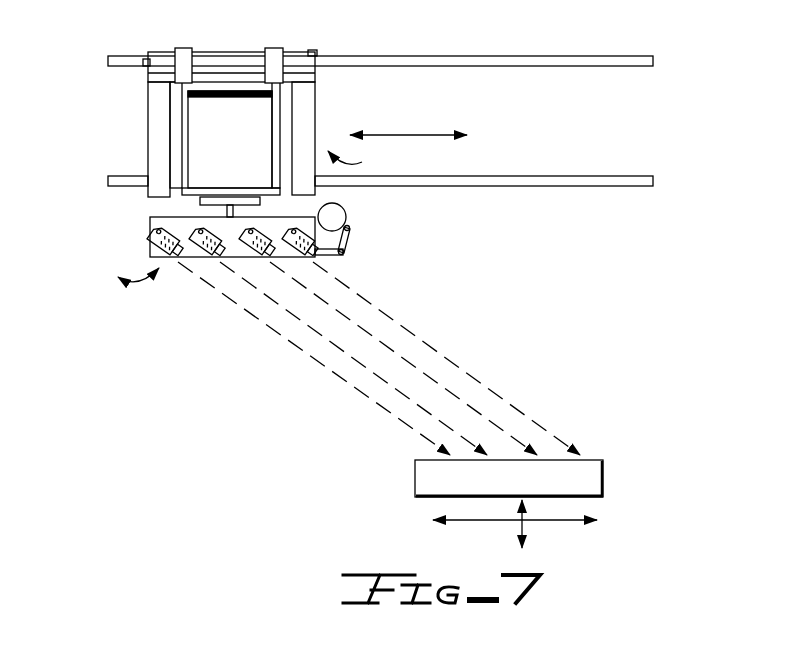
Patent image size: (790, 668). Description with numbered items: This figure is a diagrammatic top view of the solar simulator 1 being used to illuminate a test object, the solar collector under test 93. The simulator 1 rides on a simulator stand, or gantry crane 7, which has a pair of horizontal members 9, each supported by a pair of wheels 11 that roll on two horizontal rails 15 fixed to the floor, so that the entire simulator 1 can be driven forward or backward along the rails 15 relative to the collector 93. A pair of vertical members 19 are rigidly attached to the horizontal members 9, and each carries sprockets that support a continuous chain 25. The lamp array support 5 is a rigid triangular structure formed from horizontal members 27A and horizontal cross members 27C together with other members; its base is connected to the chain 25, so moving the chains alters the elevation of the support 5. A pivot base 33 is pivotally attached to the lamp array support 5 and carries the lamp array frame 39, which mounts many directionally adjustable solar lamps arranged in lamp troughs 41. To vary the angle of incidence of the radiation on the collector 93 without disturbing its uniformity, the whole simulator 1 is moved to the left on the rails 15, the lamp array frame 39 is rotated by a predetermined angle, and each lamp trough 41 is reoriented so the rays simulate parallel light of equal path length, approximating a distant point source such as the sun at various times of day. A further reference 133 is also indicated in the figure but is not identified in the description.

The solar simulator 1 is at (63, 141).
The lamp array support 5 is at (232, 108).
The gantry crane 7 is at (351, 160).
The horizontal members 9 is at (148, 124).
The wheels 11 is at (388, 310).
The horizontal rails 15 is at (519, 66).
The vertical members 19 is at (150, 53).
The continuous chain 25 is at (183, 52).
The horizontal members 27A is at (268, 134).
The horizontal cross members 27C is at (256, 106).
The pivot base 33 is at (197, 198).
The lamp array frame 39 is at (152, 221).
The lamp troughs 41 is at (201, 250).
The solar collector under test 93 is at (423, 478).
The translation direction arrow 133 is at (425, 133).